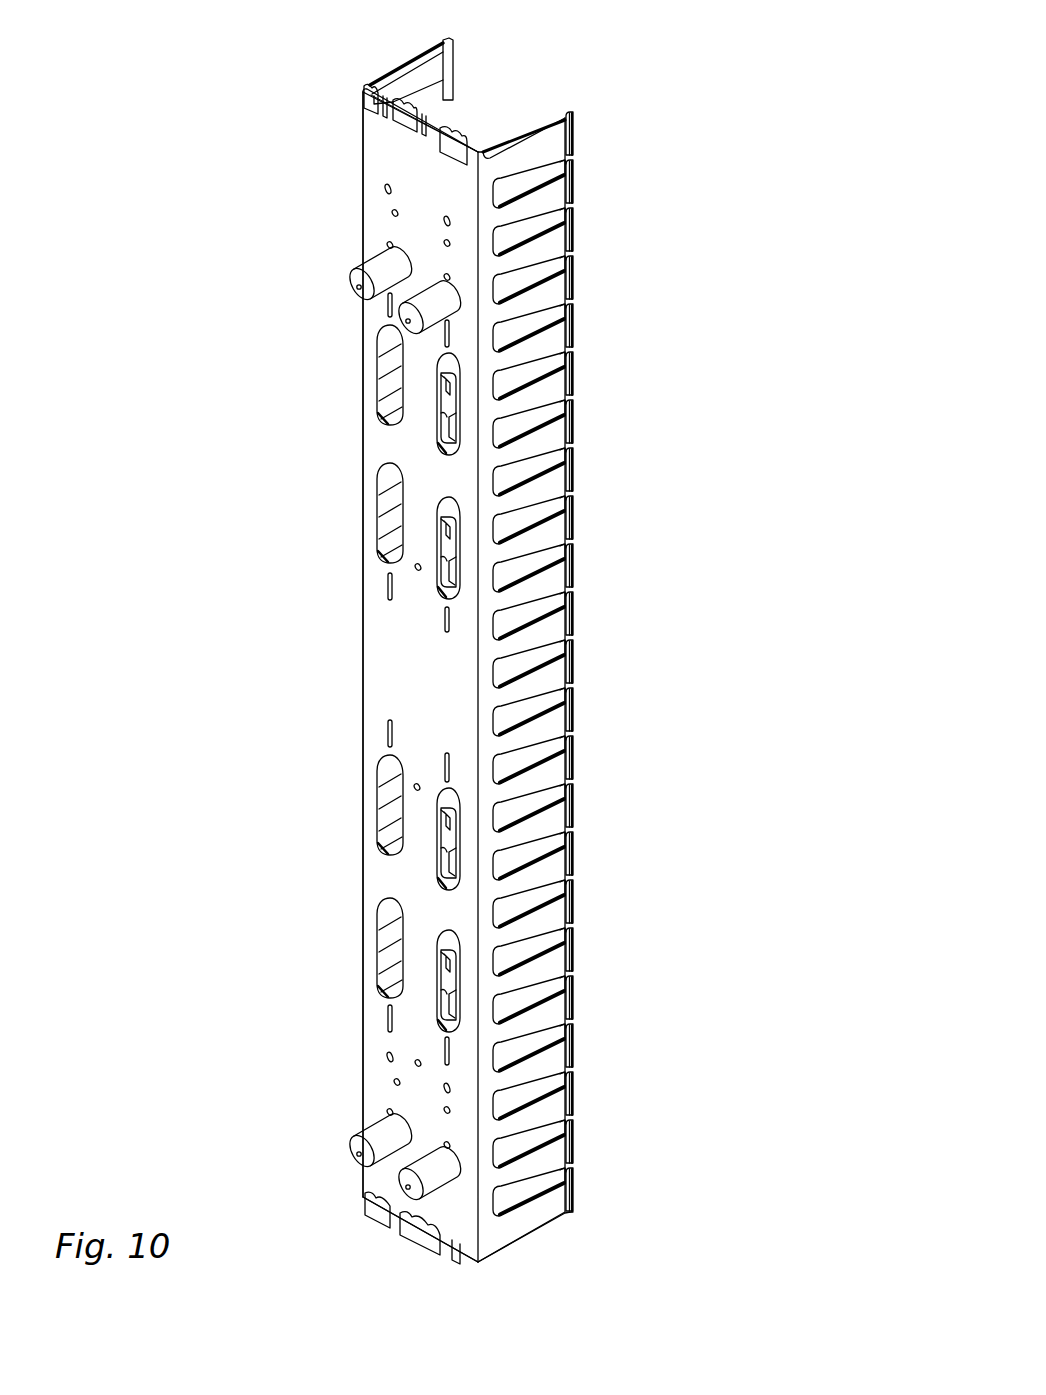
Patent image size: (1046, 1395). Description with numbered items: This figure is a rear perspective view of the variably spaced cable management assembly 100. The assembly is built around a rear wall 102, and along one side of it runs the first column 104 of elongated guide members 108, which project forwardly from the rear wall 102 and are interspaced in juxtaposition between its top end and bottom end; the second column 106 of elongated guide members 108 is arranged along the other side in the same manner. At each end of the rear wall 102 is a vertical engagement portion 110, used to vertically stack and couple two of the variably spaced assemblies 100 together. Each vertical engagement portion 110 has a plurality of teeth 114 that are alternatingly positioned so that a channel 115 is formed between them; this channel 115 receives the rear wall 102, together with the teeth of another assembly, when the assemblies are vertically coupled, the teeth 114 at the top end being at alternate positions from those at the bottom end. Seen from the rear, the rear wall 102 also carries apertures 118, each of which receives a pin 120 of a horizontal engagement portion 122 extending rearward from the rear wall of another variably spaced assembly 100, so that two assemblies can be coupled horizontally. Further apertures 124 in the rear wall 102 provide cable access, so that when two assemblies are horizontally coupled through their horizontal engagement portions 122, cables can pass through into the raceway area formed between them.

The variably spaced cable management assembly 100 is at (750, 71).
The rear wall 102 is at (388, 662).
The first column 104 is at (525, 114).
The second column 106 is at (399, 50).
The elongated guide members 108 is at (573, 186).
The vertical engagement portion 110 is at (395, 146).
The teeth 114 is at (370, 84).
The channel 115 is at (358, 90).
The apertures 118 is at (385, 190).
The pin 120 is at (360, 284).
The horizontal engagement portion 122 is at (428, 268).
The apertures 124 is at (380, 370).